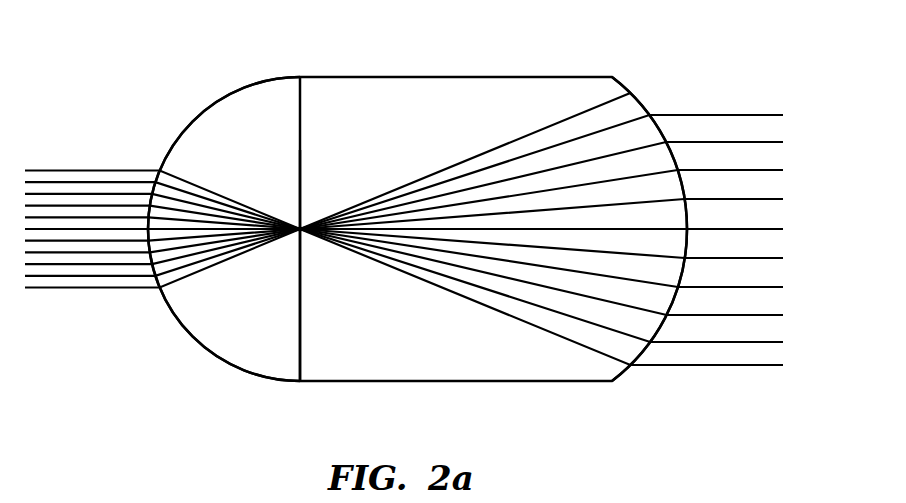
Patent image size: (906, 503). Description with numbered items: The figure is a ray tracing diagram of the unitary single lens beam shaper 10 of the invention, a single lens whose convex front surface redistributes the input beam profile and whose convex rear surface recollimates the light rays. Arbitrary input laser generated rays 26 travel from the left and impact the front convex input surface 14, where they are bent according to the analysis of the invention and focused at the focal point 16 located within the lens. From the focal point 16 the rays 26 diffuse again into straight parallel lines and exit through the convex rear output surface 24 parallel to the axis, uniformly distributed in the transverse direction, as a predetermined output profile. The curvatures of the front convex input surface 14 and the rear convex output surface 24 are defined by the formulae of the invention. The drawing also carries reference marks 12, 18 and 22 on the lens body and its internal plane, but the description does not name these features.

The unitary single lens beam shaper 10 is at (178, 390).
The first lens portion 12 is at (206, 133).
The front convex input surface 14 is at (187, 335).
The focal point 16 is at (300, 227).
The planar surface 18 is at (298, 103).
The interface plane 22 is at (300, 321).
The convex rear output surface 24 is at (652, 116).
The input laser generated rays 26 is at (127, 175).